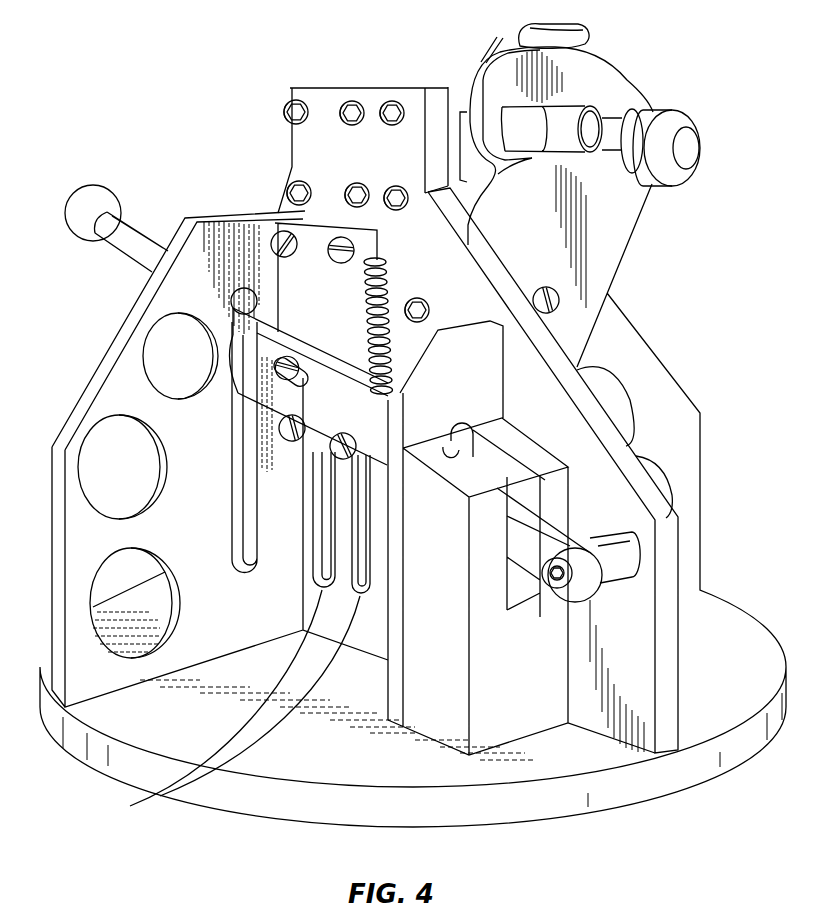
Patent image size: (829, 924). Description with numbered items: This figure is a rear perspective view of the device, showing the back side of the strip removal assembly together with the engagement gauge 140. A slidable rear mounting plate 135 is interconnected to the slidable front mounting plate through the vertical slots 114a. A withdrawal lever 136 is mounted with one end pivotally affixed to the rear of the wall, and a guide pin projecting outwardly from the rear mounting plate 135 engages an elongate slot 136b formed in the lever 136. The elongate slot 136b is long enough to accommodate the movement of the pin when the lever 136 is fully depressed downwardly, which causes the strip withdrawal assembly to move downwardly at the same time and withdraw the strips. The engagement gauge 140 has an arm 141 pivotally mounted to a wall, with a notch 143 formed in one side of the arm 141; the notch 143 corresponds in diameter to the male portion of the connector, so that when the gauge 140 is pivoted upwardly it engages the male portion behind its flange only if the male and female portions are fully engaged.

The vertical slots 114a is at (130, 806).
The rear mounting plate 135 is at (307, 285).
The withdrawal lever 136 is at (130, 242).
The elongate slot 136b is at (380, 292).
The engagement gauge 140 is at (598, 246).
The arm 141 is at (615, 205).
The notch 143 is at (448, 150).